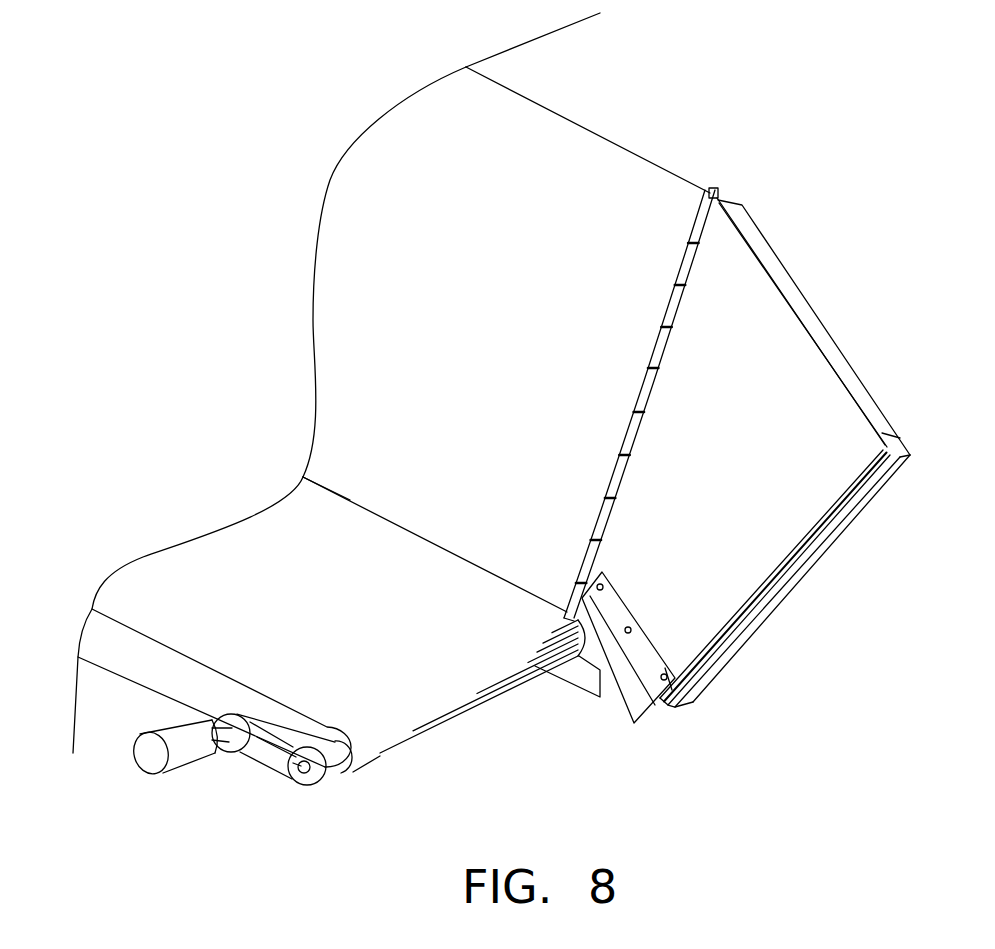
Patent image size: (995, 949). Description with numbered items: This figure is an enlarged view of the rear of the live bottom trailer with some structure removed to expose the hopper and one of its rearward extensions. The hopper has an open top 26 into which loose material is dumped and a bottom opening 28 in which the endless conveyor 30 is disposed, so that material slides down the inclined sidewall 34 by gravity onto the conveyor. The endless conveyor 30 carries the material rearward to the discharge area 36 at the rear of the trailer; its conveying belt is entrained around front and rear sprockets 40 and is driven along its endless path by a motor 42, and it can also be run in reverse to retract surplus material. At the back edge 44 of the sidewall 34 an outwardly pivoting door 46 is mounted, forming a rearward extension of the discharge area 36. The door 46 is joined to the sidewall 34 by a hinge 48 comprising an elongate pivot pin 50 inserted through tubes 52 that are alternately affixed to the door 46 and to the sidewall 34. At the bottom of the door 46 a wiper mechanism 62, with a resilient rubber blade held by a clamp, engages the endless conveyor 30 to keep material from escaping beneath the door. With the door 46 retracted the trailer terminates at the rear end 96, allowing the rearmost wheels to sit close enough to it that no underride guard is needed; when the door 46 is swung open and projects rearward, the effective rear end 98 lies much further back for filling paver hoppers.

The open top 26 is at (556, 110).
The bottom opening 28 is at (348, 497).
The endless conveyor 30 is at (373, 643).
The sidewall 34 is at (491, 365).
The discharge area 36 is at (479, 720).
The sprocket 40 is at (339, 769).
The motor 42 is at (182, 753).
The back edge 44 is at (714, 190).
The door 46 is at (740, 475).
The hinge 48 is at (648, 357).
The pivot pin 50 is at (722, 197).
The tubes 52 is at (690, 248).
The wiper mechanism 62 is at (633, 600).
The rear end 96 is at (538, 690).
The effective rear end 98 is at (705, 702).